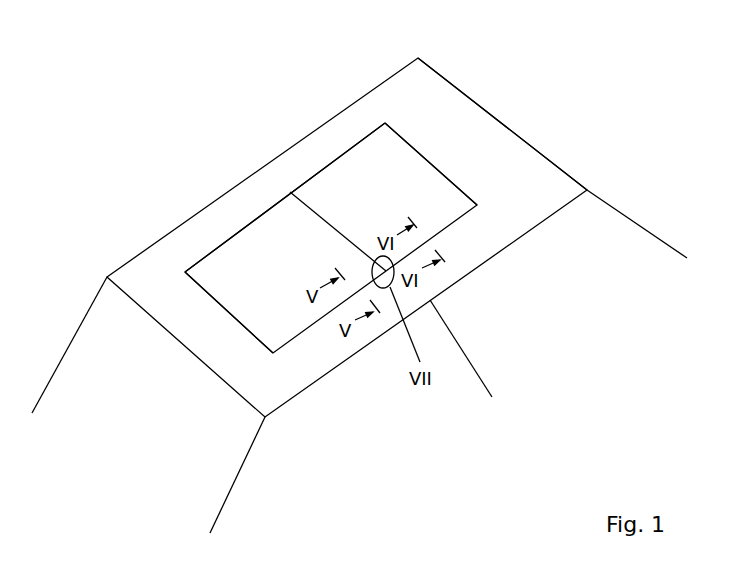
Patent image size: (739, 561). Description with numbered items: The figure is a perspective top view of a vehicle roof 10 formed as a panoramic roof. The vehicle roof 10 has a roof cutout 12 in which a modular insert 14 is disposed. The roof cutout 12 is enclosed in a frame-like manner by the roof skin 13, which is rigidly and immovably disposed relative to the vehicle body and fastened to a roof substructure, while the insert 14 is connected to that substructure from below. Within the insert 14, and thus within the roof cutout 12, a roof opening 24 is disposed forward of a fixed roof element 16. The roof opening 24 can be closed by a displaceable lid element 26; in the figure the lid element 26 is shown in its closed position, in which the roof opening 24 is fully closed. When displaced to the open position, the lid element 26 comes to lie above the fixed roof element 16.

The vehicle roof 10 is at (610, 162).
The roof cutout 12 is at (412, 143).
The roof skin 13 is at (475, 150).
The modular insert 14 is at (295, 235).
The fixed roof element 16 is at (375, 185).
The roof opening 24 is at (200, 259).
The lid element 26 is at (290, 313).